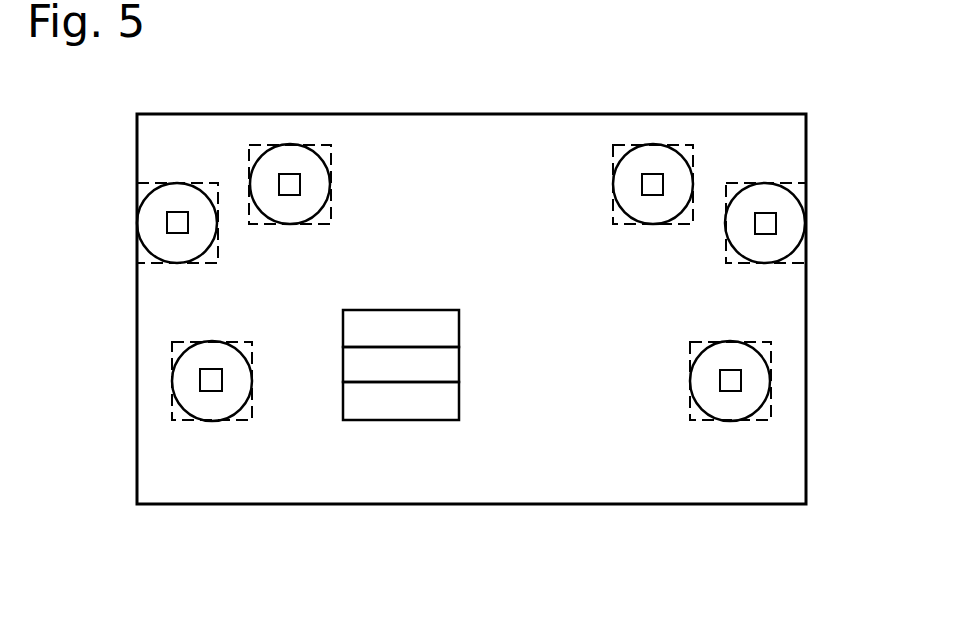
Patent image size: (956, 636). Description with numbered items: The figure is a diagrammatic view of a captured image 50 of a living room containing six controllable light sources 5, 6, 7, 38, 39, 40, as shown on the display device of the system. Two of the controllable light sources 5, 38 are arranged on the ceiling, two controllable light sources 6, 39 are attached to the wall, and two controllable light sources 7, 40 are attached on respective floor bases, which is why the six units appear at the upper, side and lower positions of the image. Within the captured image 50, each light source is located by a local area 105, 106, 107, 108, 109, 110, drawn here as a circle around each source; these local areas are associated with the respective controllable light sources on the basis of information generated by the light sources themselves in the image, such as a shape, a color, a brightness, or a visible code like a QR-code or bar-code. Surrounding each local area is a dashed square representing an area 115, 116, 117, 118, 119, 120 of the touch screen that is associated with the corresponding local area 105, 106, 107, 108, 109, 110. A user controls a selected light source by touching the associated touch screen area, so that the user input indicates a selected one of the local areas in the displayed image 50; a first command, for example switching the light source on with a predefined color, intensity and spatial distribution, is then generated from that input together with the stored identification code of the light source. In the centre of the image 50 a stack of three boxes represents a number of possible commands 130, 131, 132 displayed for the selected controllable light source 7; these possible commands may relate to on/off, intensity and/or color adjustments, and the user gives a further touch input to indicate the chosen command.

The captured image 50 is at (123, 365).
The controllable light source 5 is at (287, 173).
The controllable light source 6 is at (175, 222).
The controllable light source 7 is at (215, 382).
The controllable light source 38 is at (657, 180).
The controllable light source 39 is at (777, 223).
The controllable light source 40 is at (733, 380).
The local area 105 is at (313, 150).
The local area 106 is at (160, 262).
The local area 107 is at (233, 410).
The local area 108 is at (628, 147).
The local area 109 is at (805, 247).
The local area 110 is at (770, 408).
The area of the touch screen 115 is at (332, 147).
The area of the touch screen 116 is at (140, 183).
The area of the touch screen 117 is at (180, 422).
The area of the touch screen 118 is at (620, 143).
The area of the touch screen 119 is at (800, 182).
The area of the touch screen 120 is at (752, 420).
The possible command 130 is at (445, 408).
The possible command 131 is at (447, 367).
The possible command 132 is at (447, 328).